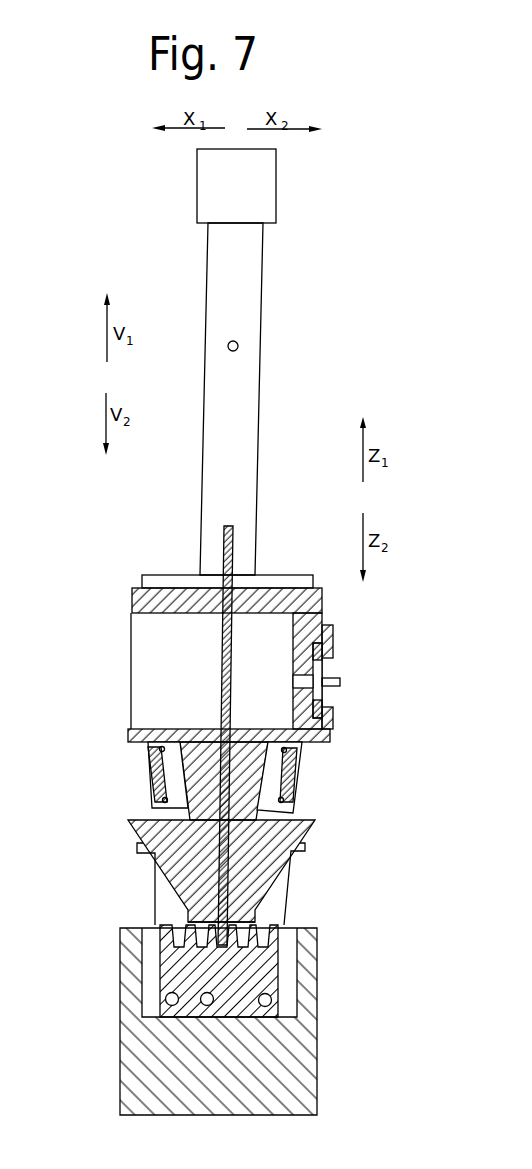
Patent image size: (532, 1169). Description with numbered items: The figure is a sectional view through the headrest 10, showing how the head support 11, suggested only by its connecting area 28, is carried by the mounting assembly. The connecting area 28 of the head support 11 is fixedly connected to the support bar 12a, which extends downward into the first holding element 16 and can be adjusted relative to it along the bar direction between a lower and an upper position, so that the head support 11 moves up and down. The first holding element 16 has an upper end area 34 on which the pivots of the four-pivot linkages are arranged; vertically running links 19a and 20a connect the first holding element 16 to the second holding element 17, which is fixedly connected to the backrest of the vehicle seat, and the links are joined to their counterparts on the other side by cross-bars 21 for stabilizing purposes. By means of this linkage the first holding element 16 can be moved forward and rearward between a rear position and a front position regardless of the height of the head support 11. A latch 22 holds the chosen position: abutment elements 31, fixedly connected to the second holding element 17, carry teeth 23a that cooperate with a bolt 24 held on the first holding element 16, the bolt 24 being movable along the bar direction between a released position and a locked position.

The headrest 10 is at (211, 619).
The head support 11 is at (260, 202).
The connecting area 28 is at (260, 172).
The support bar 12a is at (223, 423).
The bolt 24 is at (224, 546).
The upper end area 34 is at (120, 596).
The first holding element 16 is at (145, 730).
The latch 22 is at (257, 919).
The cross-bars 21 is at (148, 773).
The link 19a is at (172, 903).
The link 20a is at (273, 908).
The teeth 23a is at (152, 942).
The abutment elements 31 is at (182, 968).
The second holding element 17 is at (163, 1057).